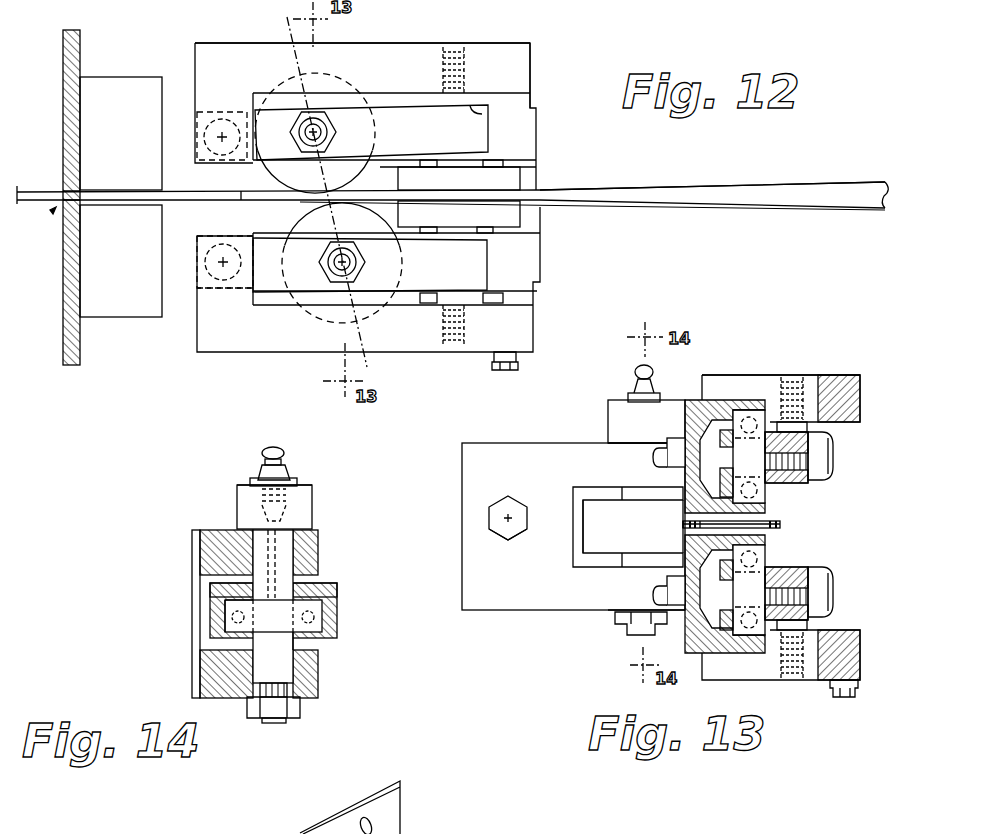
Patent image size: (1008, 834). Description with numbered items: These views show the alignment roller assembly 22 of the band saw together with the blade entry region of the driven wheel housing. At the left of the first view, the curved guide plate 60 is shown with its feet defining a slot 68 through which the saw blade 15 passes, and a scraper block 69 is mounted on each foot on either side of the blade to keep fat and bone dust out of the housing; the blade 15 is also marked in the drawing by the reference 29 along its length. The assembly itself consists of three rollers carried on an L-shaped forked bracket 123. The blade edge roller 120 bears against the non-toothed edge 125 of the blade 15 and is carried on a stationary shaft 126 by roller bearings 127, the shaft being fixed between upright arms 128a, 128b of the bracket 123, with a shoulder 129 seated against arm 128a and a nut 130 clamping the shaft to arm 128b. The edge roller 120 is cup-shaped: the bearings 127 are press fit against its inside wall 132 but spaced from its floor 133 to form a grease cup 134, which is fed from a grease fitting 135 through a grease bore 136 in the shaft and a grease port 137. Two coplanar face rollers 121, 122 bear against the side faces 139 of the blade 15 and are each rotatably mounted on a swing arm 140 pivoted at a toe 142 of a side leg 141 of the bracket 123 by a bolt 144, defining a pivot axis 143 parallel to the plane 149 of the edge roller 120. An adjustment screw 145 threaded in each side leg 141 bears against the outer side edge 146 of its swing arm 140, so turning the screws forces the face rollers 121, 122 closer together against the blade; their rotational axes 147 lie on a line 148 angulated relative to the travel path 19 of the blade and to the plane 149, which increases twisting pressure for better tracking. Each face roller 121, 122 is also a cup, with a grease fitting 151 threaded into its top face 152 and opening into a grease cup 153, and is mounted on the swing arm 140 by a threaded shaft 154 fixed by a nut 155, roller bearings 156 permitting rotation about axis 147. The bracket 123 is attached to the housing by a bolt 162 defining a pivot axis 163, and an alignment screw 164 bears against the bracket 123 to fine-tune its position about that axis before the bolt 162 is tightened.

In FIG. 12, the saw blade 15 is at (863, 192).
In FIG. 13, the saw blade 15 is at (781, 526).
In FIG. 12, the travel path 19 is at (55, 208).
In FIG. 12, the alignment roller assembly 22 is at (592, 28).
In FIG. 13, the alignment roller assembly 22 is at (850, 297).
In FIG. 14, the alignment roller assembly 22 is at (359, 538).
In FIG. 12, the wire strand 29 is at (44, 191).
In FIG. 13, the wire strand 29 is at (781, 521).
In FIG. 12, the curved guide plate 60 is at (108, 10).
In FIG. 12, the slot 68 is at (73, 187).
In FIG. 12, the scraper block 69 is at (147, 58).
In FIG. 12, the blade edge roller 120 is at (521, 168).
In FIG. 13, the blade edge roller 120 is at (593, 506).
In FIG. 14, the blade edge roller 120 is at (338, 624).
In FIG. 12, the face roller 121 is at (346, 78).
In FIG. 13, the face roller 121 is at (740, 410).
In FIG. 12, the face roller 122 is at (310, 320).
In FIG. 13, the face roller 122 is at (717, 657).
In FIG. 12, the L-shaped forked bracket 123 is at (516, 78).
In FIG. 13, the L-shaped forked bracket 123 is at (582, 599).
In FIG. 14, the L-shaped forked bracket 123 is at (191, 665).
In FIG. 12, the non-toothed edge 125 is at (632, 185).
In FIG. 13, the non-toothed edge 125 is at (683, 530).
In FIG. 13, the stationary shaft 126 is at (635, 494).
In FIG. 14, the stationary shaft 126 is at (282, 664).
In FIG. 14, the roller bearings 127 is at (310, 640).
In FIG. 12, the upright arm 128a is at (536, 133).
In FIG. 13, the upright arm 128a is at (642, 453).
In FIG. 14, the upright arm 128a is at (318, 556).
In FIG. 12, the upright arm 128b is at (526, 237).
In FIG. 13, the upright arm 128b is at (623, 594).
In FIG. 14, the upright arm 128b is at (229, 700).
In FIG. 13, the shoulder 129 is at (630, 423).
In FIG. 14, the shoulder 129 is at (312, 511).
In FIG. 13, the nut 130 is at (663, 624).
In FIG. 14, the nut 130 is at (299, 712).
In FIG. 14, the inside wall 132 is at (235, 603).
In FIG. 14, the floor 133 is at (240, 598).
In FIG. 14, the grease cup 134 is at (237, 599).
In FIG. 13, the grease fitting 135 is at (658, 388).
In FIG. 14, the grease fitting 135 is at (292, 475).
In FIG. 14, the grease bore 136 is at (237, 520).
In FIG. 14, the grease port 137 is at (283, 598).
In FIG. 12, the side faces 139 is at (241, 191).
In FIG. 13, the side faces 139 is at (690, 511).
In FIG. 12, the swing arm 140 is at (370, 198).
In FIG. 13, the swing arm 140 is at (810, 567).
In FIG. 12, the side leg 141 is at (262, 62).
In FIG. 13, the side leg 141 is at (870, 620).
In FIG. 12, the toe 142 is at (240, 167).
In FIG. 12, the pivot axis 143 is at (222, 137).
In FIG. 12, the bolt 144 is at (205, 270).
In FIG. 12, the adjustment screw 145 is at (466, 96).
In FIG. 13, the adjustment screw 145 is at (797, 373).
In FIG. 12, the outer side edge 146 is at (482, 114).
In FIG. 12, the rotational axis 147 is at (328, 132).
In FIG. 12, the line 148 is at (363, 329).
In FIG. 12, the plane of the edge roller 149 is at (266, 197).
In FIG. 13, the grease fitting 151 is at (677, 440).
In FIG. 13, the top face 152 is at (717, 400).
In FIG. 13, the grease cup 153 is at (726, 425).
In FIG. 13, the threaded shaft 154 is at (834, 447).
In FIG. 13, the nut 155 is at (815, 481).
In FIG. 13, the roller bearings 156 is at (749, 522).
In FIG. 13, the bolt 162 is at (502, 550).
In FIG. 13, the pivot axis 163 is at (508, 520).
In FIG. 12, the alignment screw 164 is at (500, 369).
In FIG. 13, the alignment screw 164 is at (866, 690).